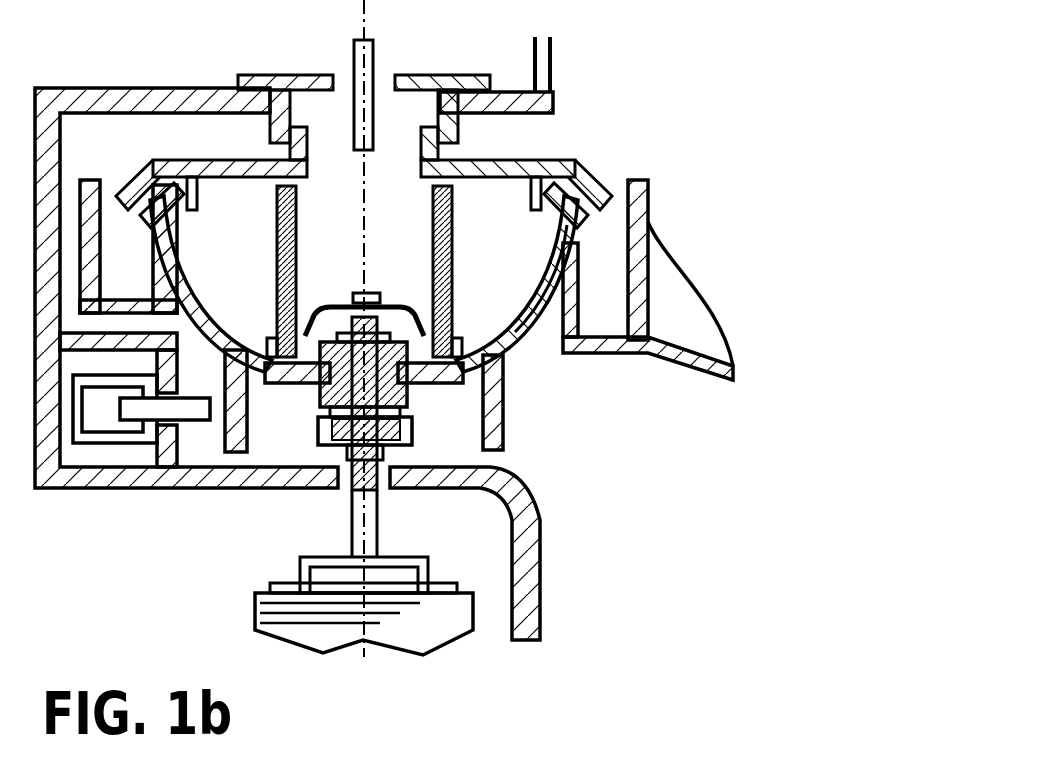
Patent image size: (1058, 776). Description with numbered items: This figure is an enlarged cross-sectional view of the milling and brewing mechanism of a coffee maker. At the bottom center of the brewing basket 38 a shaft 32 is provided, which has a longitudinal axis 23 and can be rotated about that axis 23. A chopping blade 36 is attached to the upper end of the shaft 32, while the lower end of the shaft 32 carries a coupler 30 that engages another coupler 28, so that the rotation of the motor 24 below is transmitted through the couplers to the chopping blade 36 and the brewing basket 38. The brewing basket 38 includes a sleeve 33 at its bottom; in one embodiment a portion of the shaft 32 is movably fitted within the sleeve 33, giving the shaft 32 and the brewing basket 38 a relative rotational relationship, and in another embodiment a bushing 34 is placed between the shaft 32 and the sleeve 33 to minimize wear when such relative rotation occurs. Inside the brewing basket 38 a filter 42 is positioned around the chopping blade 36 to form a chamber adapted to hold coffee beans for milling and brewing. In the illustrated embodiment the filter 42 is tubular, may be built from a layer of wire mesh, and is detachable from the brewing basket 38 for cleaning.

The longitudinal axis 23 is at (362, 2).
The motor 24 is at (262, 607).
The coupler 28 is at (412, 485).
The coupler 30 is at (415, 440).
The shaft 32 is at (395, 420).
The sleeve 33 is at (325, 358).
The bushing 34 is at (392, 405).
The chopping blade 36 is at (418, 320).
The brewing basket 38 is at (545, 318).
The filter 42 is at (448, 222).